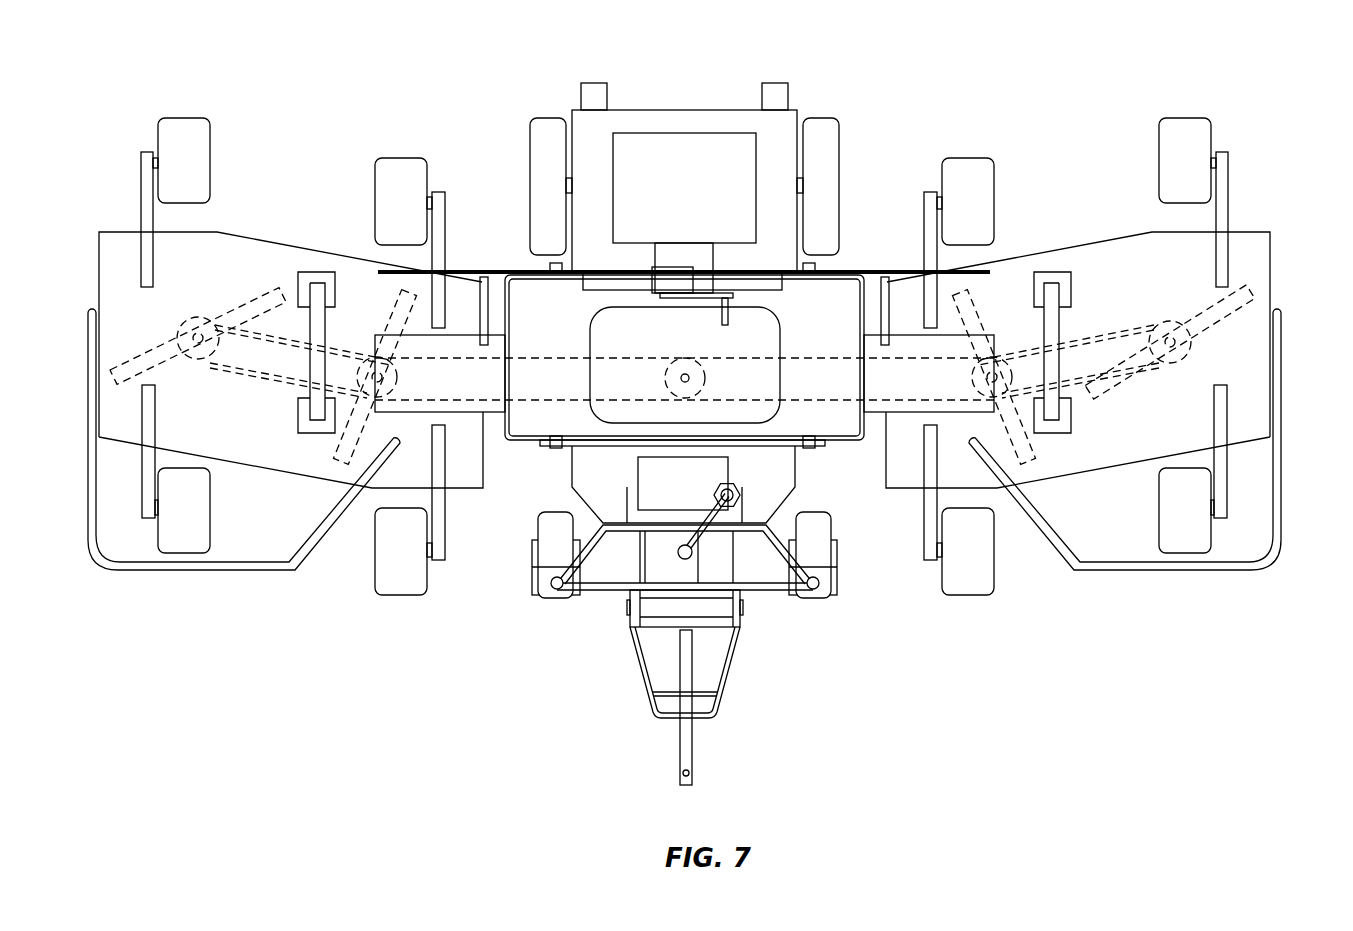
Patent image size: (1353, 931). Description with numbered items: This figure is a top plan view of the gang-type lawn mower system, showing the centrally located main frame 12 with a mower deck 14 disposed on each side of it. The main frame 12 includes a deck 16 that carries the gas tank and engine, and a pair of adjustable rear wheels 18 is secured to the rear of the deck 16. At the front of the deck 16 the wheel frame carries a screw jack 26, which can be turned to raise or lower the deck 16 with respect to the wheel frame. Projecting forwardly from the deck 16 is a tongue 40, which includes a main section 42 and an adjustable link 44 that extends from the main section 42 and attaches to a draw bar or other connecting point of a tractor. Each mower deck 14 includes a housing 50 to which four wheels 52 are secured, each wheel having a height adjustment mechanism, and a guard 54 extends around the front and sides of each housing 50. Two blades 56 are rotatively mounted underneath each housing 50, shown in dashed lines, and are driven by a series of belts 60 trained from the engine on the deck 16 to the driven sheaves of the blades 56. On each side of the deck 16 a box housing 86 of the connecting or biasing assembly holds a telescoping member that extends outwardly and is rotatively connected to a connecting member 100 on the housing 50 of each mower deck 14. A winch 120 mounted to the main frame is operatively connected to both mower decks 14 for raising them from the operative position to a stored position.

The main frame 12 is at (565, 627).
The mower deck 14 is at (267, 593).
The deck 16 is at (782, 303).
The adjustable rear wheels 18 is at (548, 147).
The screw jack 26 is at (685, 552).
The tongue 40 is at (633, 712).
The main section 42 is at (732, 663).
The adjustable link 44 is at (692, 748).
The housing 50 is at (122, 273).
The wheels 52 is at (183, 128).
The guard 54 is at (143, 568).
The blades 56 is at (147, 350).
The belts 60 is at (493, 410).
The box housing 86 is at (483, 345).
The connecting member 100 is at (313, 318).
The winch 120 is at (653, 263).